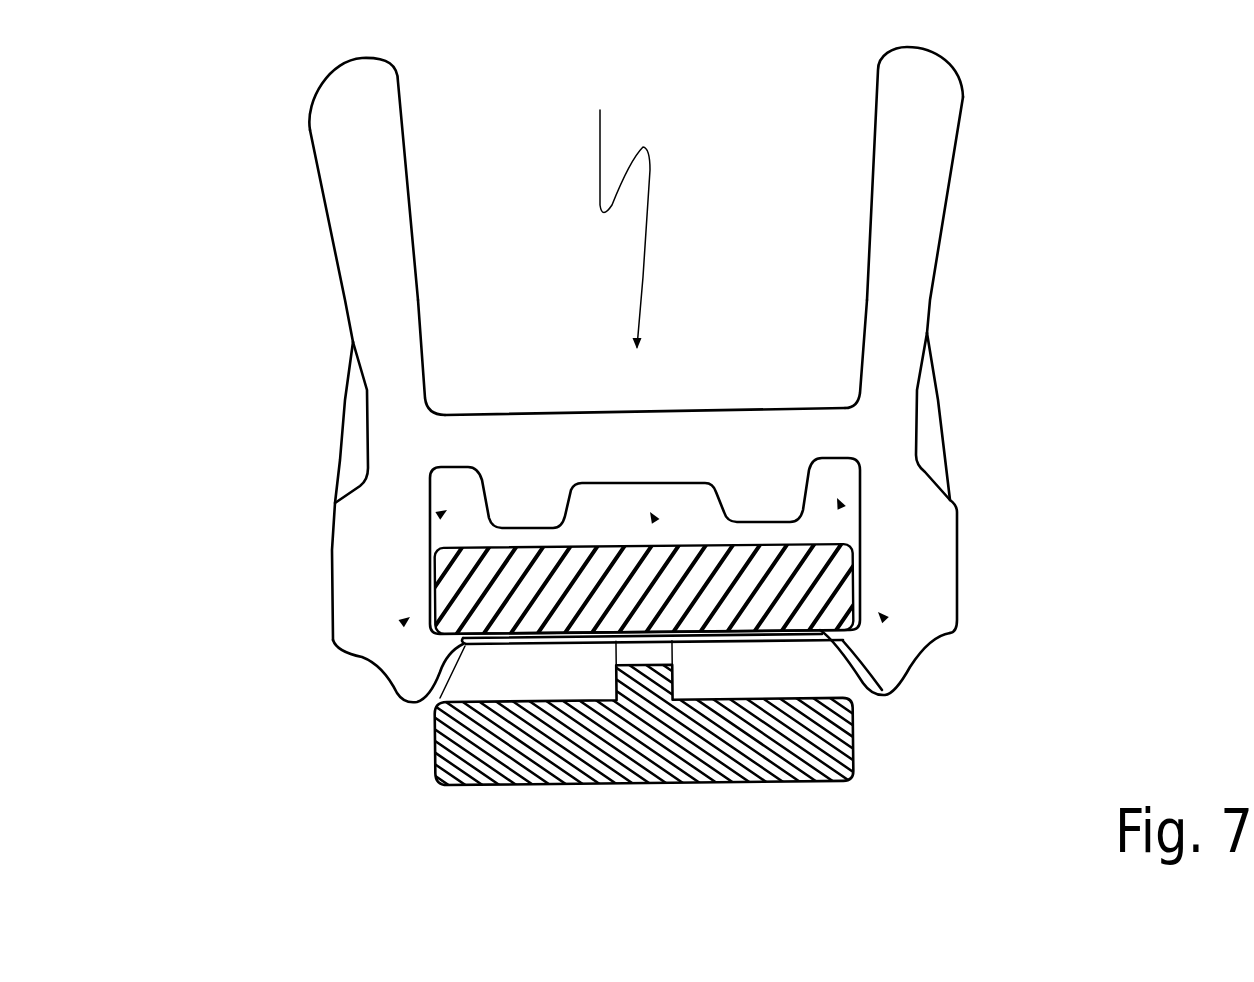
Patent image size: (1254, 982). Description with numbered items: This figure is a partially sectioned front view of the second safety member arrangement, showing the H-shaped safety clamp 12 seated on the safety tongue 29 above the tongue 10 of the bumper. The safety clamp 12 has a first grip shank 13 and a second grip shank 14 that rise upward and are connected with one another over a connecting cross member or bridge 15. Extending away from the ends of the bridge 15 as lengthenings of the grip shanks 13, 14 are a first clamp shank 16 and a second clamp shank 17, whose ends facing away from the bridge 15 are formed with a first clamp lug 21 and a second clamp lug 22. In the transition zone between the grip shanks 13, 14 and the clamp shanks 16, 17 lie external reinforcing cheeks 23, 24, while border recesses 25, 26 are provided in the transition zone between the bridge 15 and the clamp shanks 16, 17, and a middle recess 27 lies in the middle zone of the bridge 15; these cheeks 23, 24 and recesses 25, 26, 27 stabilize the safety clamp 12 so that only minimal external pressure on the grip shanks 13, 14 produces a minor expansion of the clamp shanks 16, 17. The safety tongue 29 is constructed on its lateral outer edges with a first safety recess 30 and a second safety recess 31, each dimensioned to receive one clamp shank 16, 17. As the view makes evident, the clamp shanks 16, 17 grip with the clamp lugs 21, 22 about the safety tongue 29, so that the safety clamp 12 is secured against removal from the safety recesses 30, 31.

The tongue 10 is at (580, 738).
The safety clamp 12 is at (615, 204).
The first grip shank 13 is at (352, 192).
The second grip shank 14 is at (918, 234).
The bridge 15 is at (762, 442).
The first clamp shank 16 is at (395, 518).
The second clamp shank 17 is at (913, 522).
The first clamp lug 21 is at (463, 643).
The second clamp lug 22 is at (886, 694).
The first reinforcing cheek 23 is at (352, 445).
The second reinforcing cheek 24 is at (928, 426).
The first border recess 25 is at (445, 512).
The second border recess 26 is at (880, 614).
The middle recess 27 is at (650, 512).
The safety tongue 29 is at (553, 602).
The first safety recess 30 is at (408, 618).
The second safety recess 31 is at (838, 500).